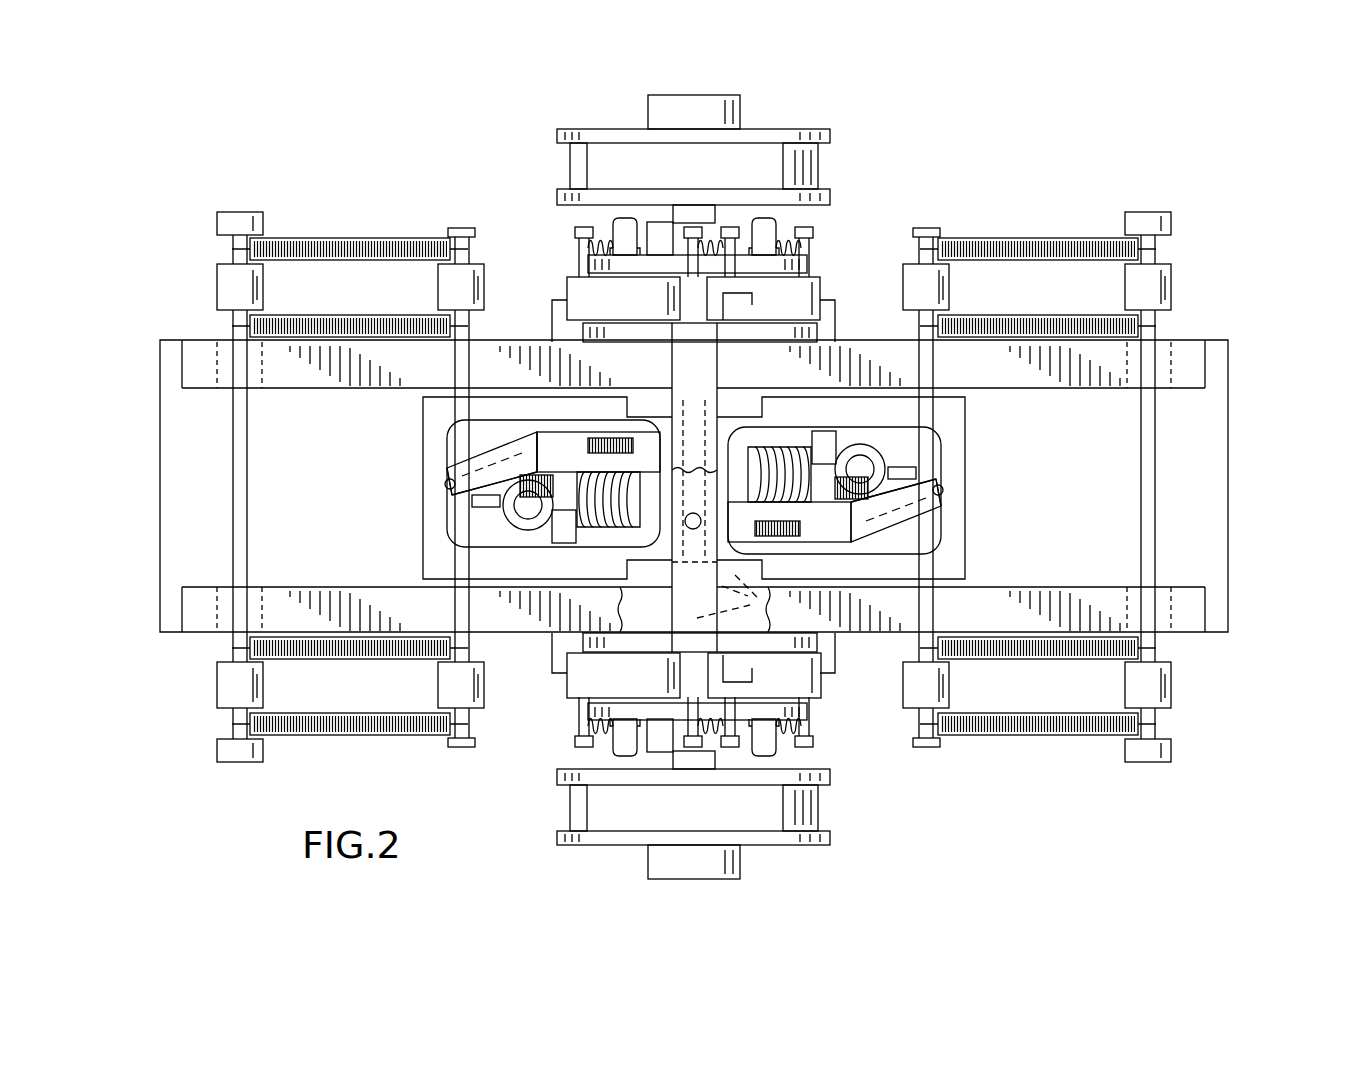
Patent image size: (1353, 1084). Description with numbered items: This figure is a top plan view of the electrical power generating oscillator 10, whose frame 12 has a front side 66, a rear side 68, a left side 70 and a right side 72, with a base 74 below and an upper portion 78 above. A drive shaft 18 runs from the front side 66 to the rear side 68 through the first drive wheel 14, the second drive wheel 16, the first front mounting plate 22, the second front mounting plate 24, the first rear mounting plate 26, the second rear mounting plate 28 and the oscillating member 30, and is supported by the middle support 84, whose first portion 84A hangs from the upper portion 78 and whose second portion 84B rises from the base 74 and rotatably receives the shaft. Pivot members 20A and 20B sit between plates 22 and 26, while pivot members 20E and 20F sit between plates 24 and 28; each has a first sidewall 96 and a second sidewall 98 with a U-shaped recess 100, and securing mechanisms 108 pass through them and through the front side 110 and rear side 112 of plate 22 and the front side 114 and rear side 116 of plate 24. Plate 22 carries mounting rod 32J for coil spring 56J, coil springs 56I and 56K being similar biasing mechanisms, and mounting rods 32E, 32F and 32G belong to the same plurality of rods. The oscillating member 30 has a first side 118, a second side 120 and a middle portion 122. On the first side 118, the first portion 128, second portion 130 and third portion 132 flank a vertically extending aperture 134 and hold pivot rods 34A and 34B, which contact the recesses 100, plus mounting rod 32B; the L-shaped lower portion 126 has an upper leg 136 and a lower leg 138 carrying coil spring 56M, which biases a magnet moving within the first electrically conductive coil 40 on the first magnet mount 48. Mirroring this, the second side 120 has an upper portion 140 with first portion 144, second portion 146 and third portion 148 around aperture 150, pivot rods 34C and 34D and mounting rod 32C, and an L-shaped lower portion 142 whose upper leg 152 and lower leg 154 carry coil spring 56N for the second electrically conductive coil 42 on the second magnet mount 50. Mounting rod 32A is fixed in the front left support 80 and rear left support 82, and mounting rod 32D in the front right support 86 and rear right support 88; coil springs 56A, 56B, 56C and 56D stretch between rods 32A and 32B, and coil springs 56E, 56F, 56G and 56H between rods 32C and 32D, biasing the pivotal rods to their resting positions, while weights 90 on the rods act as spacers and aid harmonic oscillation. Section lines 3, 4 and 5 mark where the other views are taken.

The electrical power generating oscillator 10 is at (1047, 165).
The frame 12 is at (1232, 560).
The first drive wheel 14 is at (835, 832).
The second drive wheel 16 is at (820, 165).
The drive shaft 18 is at (688, 215).
The pivot member 20A is at (565, 690).
The pivot member 20B is at (823, 698).
The pivot member 20E is at (565, 292).
The pivot member 20F is at (823, 297).
The first front mounting plate 22 is at (586, 710).
The second front mounting plate 24 is at (586, 265).
The first rear mounting plate 26 is at (610, 630).
The second rear mounting plate 28 is at (614, 345).
The oscillating member 30 is at (428, 500).
The mounting rod 32A is at (233, 508).
The mounting rod 32B is at (462, 226).
The mounting rod 32C is at (932, 226).
The mounting rod 32D is at (1160, 535).
The mounting rod 32E is at (585, 737).
The mounting rod 32F is at (730, 748).
The mounting rod 32G is at (810, 735).
The mounting rod 32J is at (700, 772).
The pivot rod 34A is at (560, 327).
The pivot rod 34B is at (560, 655).
The pivot rod 34C is at (828, 327).
The pivot rod 34D is at (828, 655).
The first electrically conductive coil 40 is at (600, 513).
The second electrically conductive coil 42 is at (792, 460).
The first magnet mount 48 is at (573, 482).
The second magnet mount 50 is at (812, 490).
The coil spring 56A is at (368, 238).
The coil spring 56B is at (357, 313).
The coil spring 56C is at (353, 658).
The coil spring 56D is at (367, 733).
The coil spring 56E is at (1022, 240).
The coil spring 56F is at (1033, 317).
The coil spring 56G is at (1030, 660).
The coil spring 56H is at (1030, 735).
The coil spring 56I is at (618, 745).
The coil spring 56J is at (712, 760).
The coil spring 56K is at (778, 748).
The coil spring 56M is at (540, 500).
The coil spring 56N is at (950, 425).
The front side 66 is at (930, 795).
The rear side 68 is at (462, 185).
The left side 70 is at (127, 403).
The right side 72 is at (1262, 403).
The base 74 is at (178, 548).
The upper portion 78 is at (197, 366).
The front left support 80 is at (228, 622).
The rear left support 82 is at (228, 350).
The middle support 84 is at (677, 537).
The first portion 84A is at (745, 555).
The second portion 84B is at (767, 602).
The front right support 86 is at (1160, 622).
The rear right support 88 is at (1160, 352).
The weights 90 is at (217, 222).
The first sidewall 96 is at (627, 278).
The second sidewall 98 is at (650, 323).
The U-shaped recess 100 is at (737, 307).
The securing mechanisms 108 is at (663, 252).
The front side 110 is at (685, 768).
The rear side 112 is at (623, 675).
The front side 114 is at (627, 226).
The rear side 116 is at (623, 298).
The first side 118 is at (418, 468).
The second side 120 is at (975, 512).
The middle portion 122 is at (730, 418).
The L-shaped lower portion 126 is at (467, 447).
The upper leg 136 is at (494, 483).
The first portion 128 is at (515, 575).
The second portion 130 is at (440, 494).
The third portion 132 is at (513, 403).
The vertically extending aperture 134 is at (480, 430).
The lower leg 138 is at (493, 505).
The upper portion 140 is at (965, 462).
The L-shaped lower portion 142 is at (917, 523).
The upper leg 152 is at (893, 490).
The first portion 144 is at (892, 578).
The second portion 146 is at (970, 487).
The third portion 148 is at (896, 338).
The vertically extending aperture 150 is at (905, 545).
The lower leg 154 is at (960, 448).
The section line 3 is at (187, 764).
The section line 4 is at (187, 672).
The section line 5 is at (187, 490).